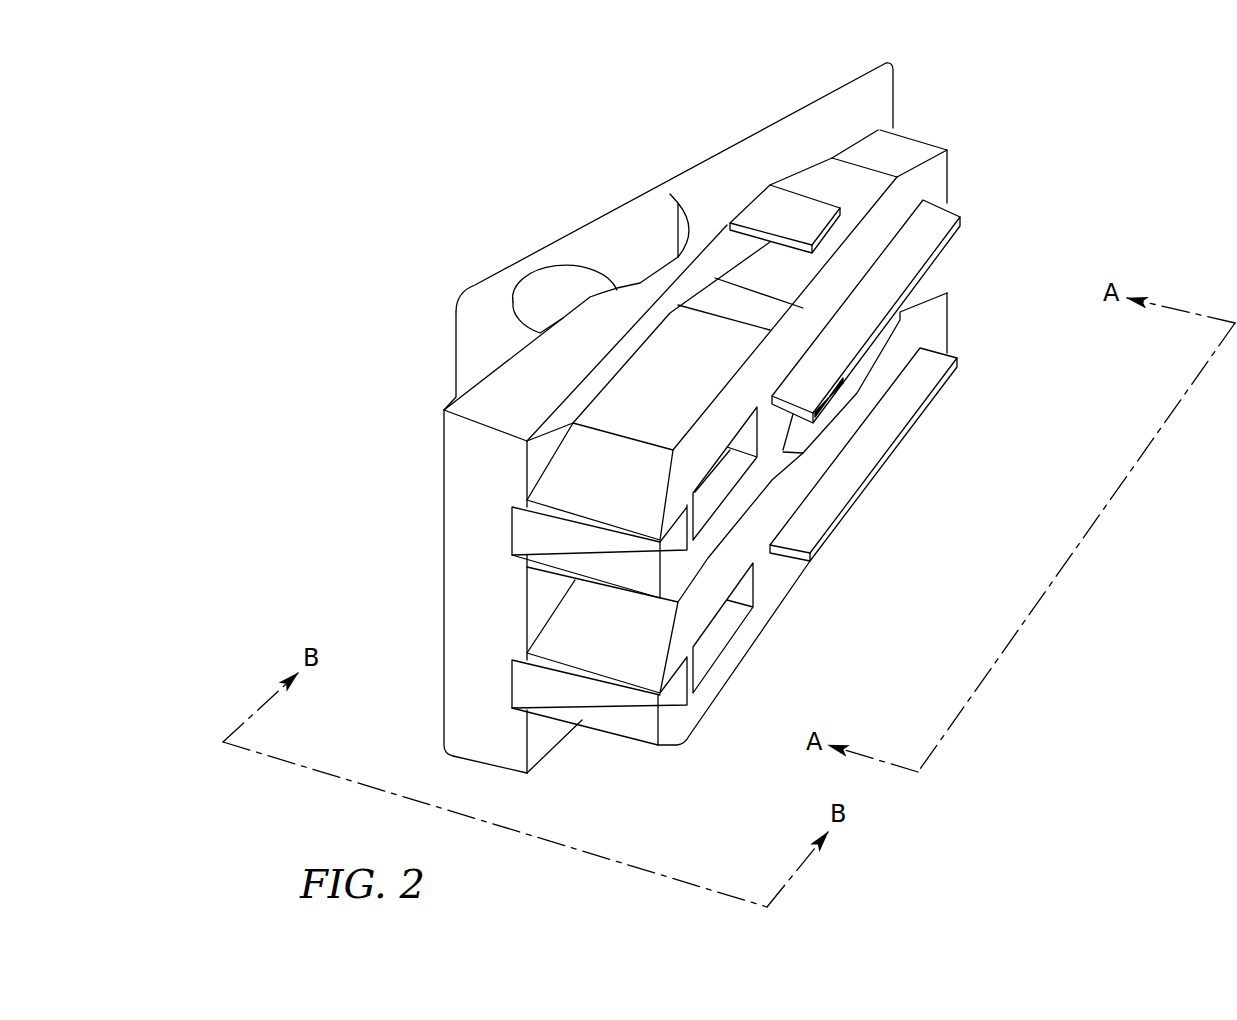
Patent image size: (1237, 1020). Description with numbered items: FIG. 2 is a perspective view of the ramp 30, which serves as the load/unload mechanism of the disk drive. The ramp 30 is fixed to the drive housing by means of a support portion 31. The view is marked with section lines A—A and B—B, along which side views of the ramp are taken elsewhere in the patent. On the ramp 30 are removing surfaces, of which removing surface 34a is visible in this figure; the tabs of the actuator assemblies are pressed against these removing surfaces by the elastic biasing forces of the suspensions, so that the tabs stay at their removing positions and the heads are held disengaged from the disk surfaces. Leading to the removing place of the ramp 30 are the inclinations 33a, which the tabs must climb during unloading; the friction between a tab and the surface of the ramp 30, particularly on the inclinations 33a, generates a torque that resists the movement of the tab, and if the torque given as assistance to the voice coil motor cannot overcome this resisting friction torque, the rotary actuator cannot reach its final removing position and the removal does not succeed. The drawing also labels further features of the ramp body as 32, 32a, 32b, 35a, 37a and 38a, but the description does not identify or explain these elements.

The ramp 30 is at (843, 68).
The support portion 31 is at (563, 283).
The housing 32 is at (975, 171).
The upper housing portion 32a is at (922, 137).
The lower shelf flange 32b is at (625, 747).
The inclination 33a is at (720, 302).
The removing surface 34a is at (748, 270).
The top surfaces 35a is at (840, 187).
The spring arm 37a is at (921, 247).
The tongue 38a is at (773, 212).